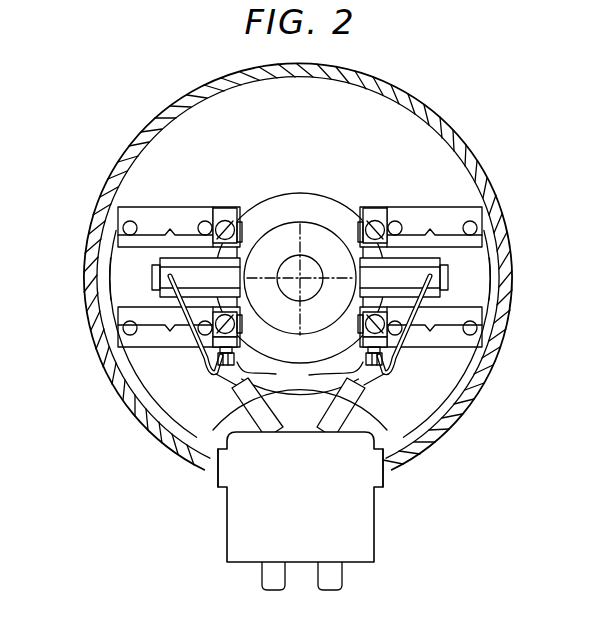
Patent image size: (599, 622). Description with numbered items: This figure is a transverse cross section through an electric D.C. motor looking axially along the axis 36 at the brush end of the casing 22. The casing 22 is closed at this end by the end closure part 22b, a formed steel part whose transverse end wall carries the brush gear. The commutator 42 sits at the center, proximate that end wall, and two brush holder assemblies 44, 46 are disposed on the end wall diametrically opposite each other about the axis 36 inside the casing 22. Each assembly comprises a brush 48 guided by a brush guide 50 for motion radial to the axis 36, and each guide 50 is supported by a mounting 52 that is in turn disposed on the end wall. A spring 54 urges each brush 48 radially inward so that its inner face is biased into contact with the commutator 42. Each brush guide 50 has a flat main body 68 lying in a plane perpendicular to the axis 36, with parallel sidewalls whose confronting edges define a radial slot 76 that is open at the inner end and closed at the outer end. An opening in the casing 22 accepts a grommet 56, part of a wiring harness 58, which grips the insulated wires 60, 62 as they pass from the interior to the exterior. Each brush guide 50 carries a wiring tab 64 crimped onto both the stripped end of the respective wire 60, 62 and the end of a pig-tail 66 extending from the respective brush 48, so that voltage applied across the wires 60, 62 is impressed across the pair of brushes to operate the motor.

The casing 22 is at (374, 72).
The end closure part 22b is at (420, 101).
The axis 36 is at (300, 278).
The commutator 42 is at (277, 223).
The brush holder assembly 44 is at (167, 200).
The brush holder assembly 46 is at (408, 201).
The brush 48 is at (200, 272).
The brush guide 50 is at (106, 278).
The mounting 52 is at (118, 208).
The spring 54 is at (124, 386).
The grommet 56 is at (370, 508).
The wiring harness 58 is at (394, 549).
The insulated wire 60 is at (226, 387).
The insulated wire 62 is at (366, 388).
The wiring tab 64 is at (300, 376).
The pig-tail 66 is at (196, 368).
The main body 68 is at (116, 298).
The radial slot 76 is at (152, 272).